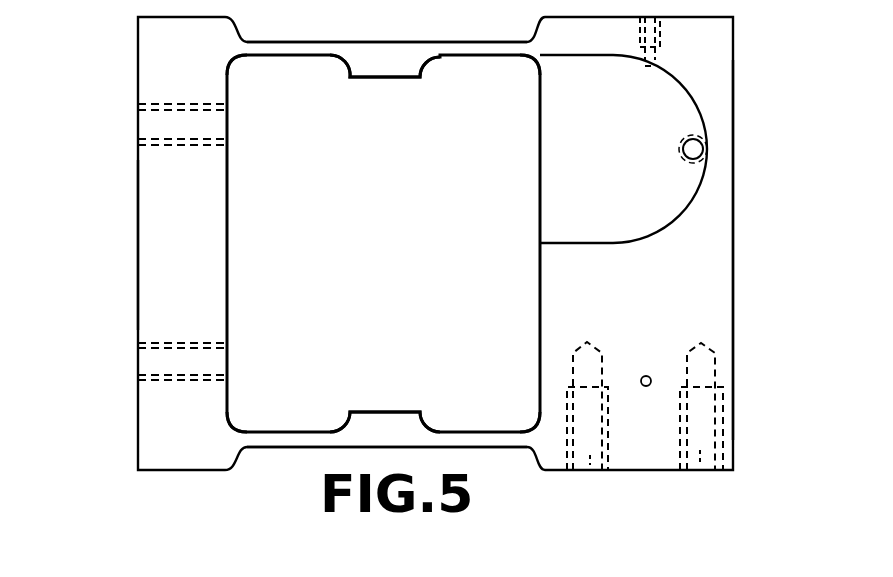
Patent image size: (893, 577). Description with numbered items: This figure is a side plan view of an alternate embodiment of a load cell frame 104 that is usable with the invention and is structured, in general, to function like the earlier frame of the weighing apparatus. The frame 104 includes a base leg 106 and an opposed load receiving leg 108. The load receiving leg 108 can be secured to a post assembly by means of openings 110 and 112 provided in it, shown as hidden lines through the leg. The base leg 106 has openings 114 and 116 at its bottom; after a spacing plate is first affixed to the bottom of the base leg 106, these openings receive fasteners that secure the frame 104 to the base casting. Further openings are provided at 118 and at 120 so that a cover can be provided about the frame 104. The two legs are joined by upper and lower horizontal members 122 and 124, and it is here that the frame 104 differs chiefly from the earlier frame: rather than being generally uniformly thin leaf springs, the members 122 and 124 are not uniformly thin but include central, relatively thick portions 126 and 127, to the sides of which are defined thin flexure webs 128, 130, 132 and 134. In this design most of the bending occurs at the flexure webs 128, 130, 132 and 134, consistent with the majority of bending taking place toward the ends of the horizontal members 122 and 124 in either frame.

The load cell frame 104 is at (124, 270).
The base leg 106 is at (718, 246).
The load receiving leg 108 is at (168, 198).
The opening 110 is at (172, 123).
The opening 112 is at (172, 362).
The opening 114 is at (596, 458).
The opening 116 is at (695, 470).
The opening 118 is at (663, 60).
The opening 120 is at (650, 375).
The upper horizontal member 122 is at (374, 40).
The lower horizontal member 124 is at (345, 452).
The central thick portion 126 is at (395, 78).
The central thick portion 127 is at (377, 410).
The flexure web 128 is at (308, 57).
The flexure web 130 is at (505, 57).
The flexure web 132 is at (285, 430).
The flexure web 134 is at (500, 430).